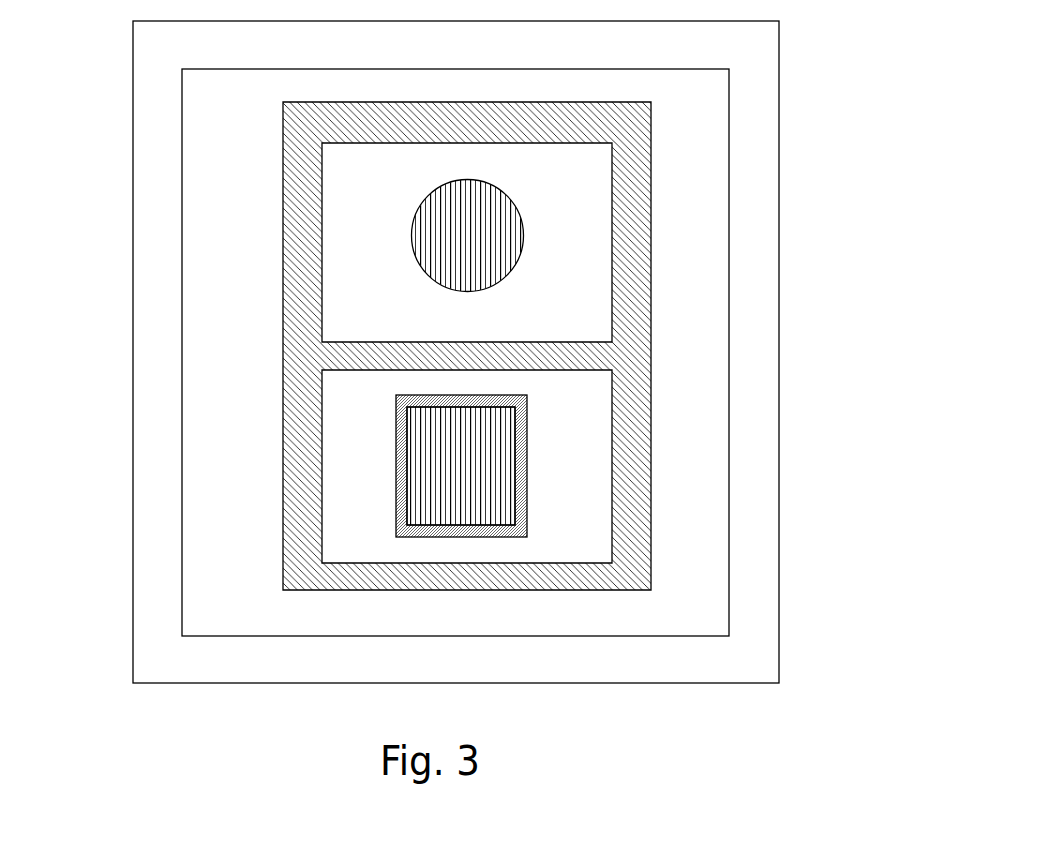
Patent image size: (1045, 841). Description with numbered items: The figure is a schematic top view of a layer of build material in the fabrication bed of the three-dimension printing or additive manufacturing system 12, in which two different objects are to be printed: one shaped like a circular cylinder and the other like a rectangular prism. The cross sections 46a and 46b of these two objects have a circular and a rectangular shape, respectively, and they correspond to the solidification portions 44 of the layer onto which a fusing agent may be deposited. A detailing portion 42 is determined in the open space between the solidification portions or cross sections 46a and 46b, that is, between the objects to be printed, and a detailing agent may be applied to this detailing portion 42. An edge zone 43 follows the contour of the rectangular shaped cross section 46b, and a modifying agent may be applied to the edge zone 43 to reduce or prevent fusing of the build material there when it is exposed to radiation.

The three-dimension printing or additive manufacturing system 12 is at (758, 103).
The detailing portion 42 is at (651, 346).
The edge zone 43 is at (460, 538).
The solidification portions 44 is at (396, 466).
The circular cross section 46a is at (523, 236).
The rectangular cross section 46b is at (527, 466).